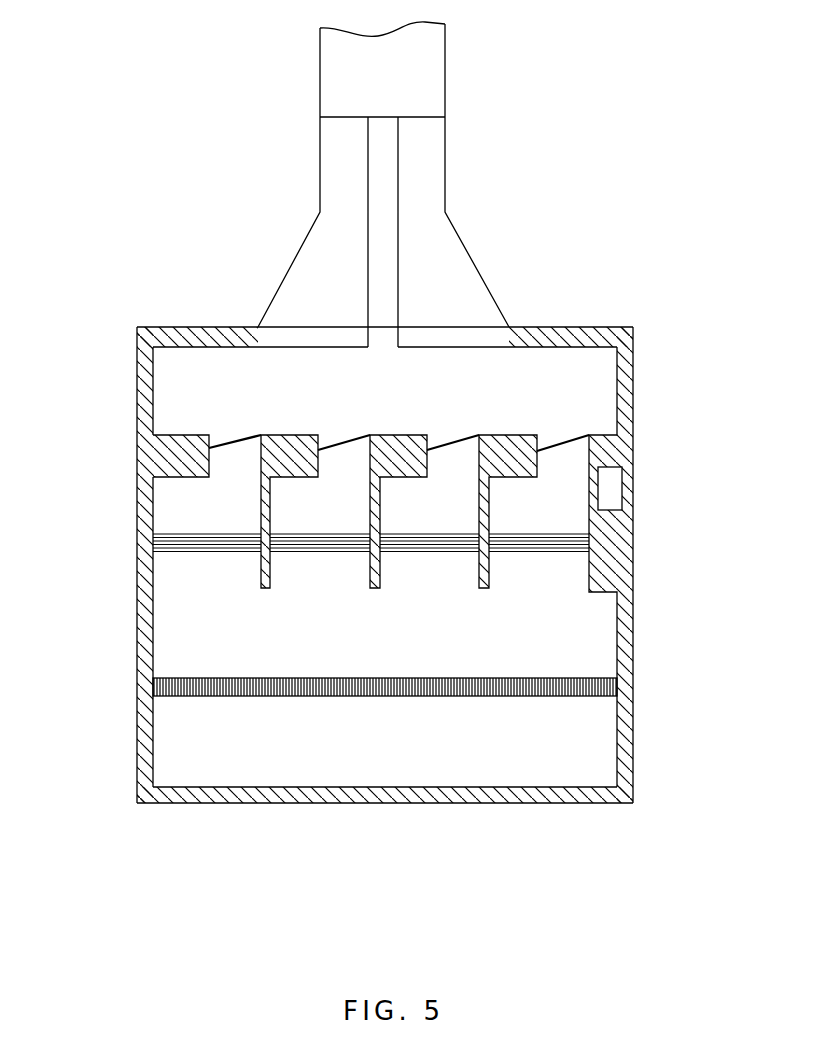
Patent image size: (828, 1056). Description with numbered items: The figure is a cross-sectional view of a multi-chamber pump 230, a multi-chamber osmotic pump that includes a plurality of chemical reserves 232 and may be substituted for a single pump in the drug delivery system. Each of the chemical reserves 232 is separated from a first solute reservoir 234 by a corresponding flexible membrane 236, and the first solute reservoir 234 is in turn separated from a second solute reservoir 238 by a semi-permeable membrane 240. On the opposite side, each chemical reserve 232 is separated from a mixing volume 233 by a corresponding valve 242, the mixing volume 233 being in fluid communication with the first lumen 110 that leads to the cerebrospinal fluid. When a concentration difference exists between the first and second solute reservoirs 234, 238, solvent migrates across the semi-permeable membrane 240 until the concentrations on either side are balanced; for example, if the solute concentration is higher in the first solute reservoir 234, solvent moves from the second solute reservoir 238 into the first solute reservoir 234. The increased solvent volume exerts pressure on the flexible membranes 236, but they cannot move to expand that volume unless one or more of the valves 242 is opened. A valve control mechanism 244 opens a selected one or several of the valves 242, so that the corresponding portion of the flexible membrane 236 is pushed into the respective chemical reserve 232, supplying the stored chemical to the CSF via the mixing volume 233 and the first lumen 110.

The first lumen 110 is at (437, 86).
The multi-chamber pump 230 is at (328, 828).
The chemical reserves 232 is at (179, 506).
The mixing volume 233 is at (503, 368).
The first solute reservoir 234 is at (178, 651).
The flexible membrane 236 is at (217, 556).
The second solute reservoir 238 is at (442, 770).
The semi-permeable membrane 240 is at (383, 697).
The valves 242 is at (234, 441).
The valve control mechanism 244 is at (622, 483).